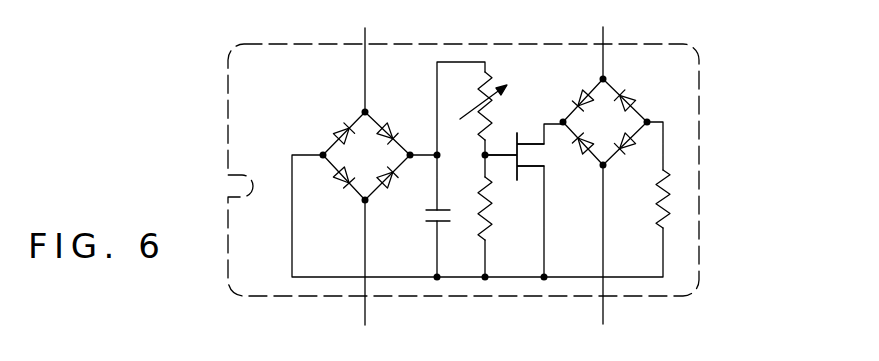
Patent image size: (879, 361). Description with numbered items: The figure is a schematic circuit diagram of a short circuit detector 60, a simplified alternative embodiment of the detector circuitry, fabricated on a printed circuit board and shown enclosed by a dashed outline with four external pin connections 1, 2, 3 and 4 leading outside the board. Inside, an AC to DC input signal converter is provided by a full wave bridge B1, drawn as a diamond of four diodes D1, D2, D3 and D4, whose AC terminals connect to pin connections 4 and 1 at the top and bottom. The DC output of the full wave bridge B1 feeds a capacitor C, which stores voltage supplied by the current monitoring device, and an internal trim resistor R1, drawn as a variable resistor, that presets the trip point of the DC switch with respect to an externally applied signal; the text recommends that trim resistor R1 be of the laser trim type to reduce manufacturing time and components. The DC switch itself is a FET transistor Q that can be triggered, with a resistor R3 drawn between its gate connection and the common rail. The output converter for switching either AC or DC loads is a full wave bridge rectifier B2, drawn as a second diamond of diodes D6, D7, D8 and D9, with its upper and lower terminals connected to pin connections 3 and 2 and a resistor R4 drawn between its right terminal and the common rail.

The short circuit detector 60 is at (705, 145).
The external pin connection 1 is at (365, 276).
The external pin connection 2 is at (603, 258).
The external pin connection 3 is at (603, 39).
The external pin connection 4 is at (365, 56).
The full wave bridge B1 is at (346, 147).
The full wave bridge rectifier B2 is at (618, 112).
The diode D1 is at (335, 122).
The diode D2 is at (395, 122).
The diode D3 is at (335, 186).
The diode D4 is at (397, 186).
The diode D6 is at (577, 153).
The diode D7 is at (571, 95).
The diode D8 is at (632, 153).
The diode D9 is at (637, 95).
The internal trim resistor R1 is at (477, 106).
The resistor R3 is at (497, 208).
The resistor R4 is at (649, 199).
The capacitor C is at (428, 219).
The FET transistor Q is at (506, 143).